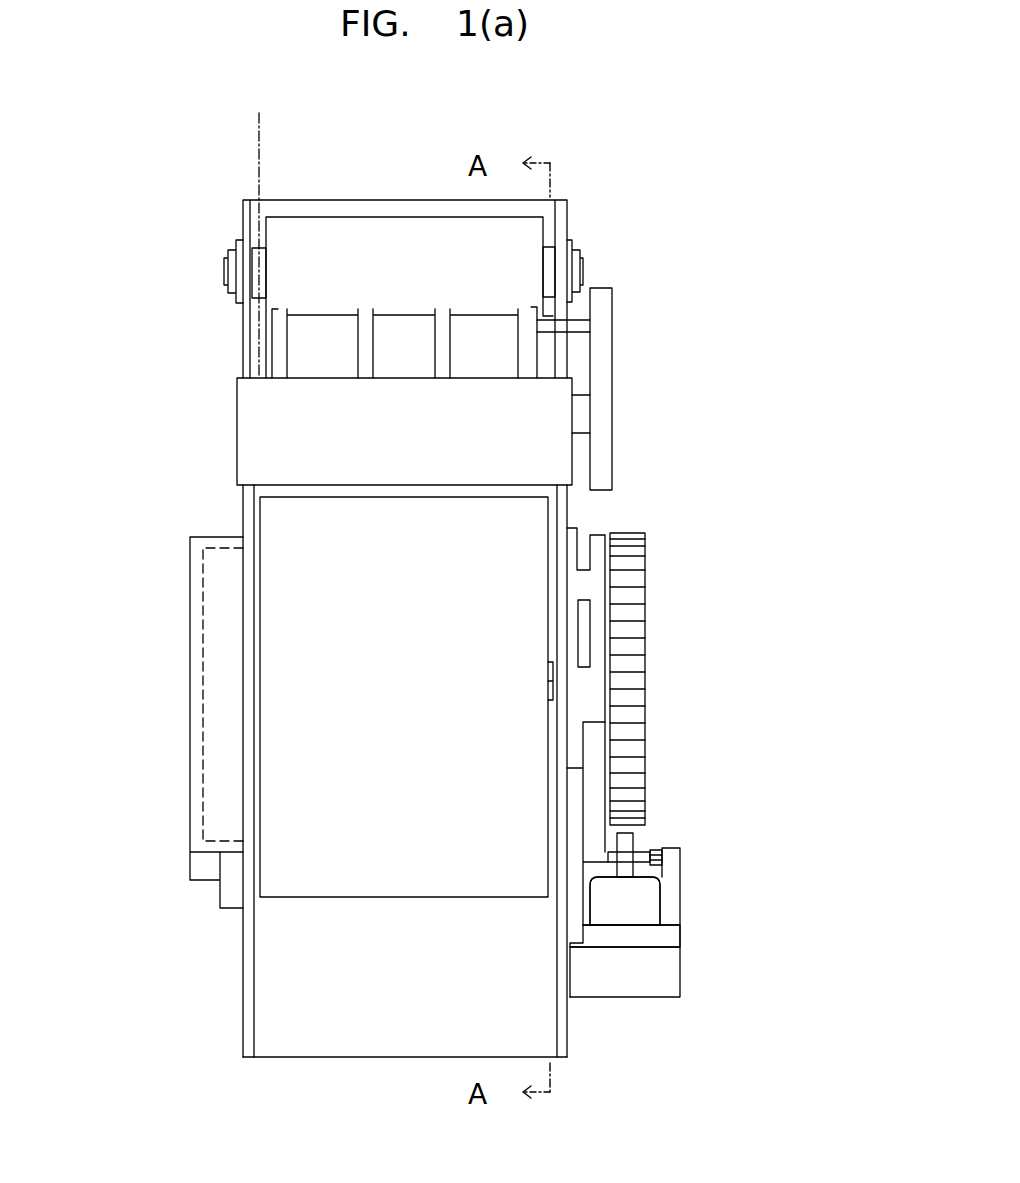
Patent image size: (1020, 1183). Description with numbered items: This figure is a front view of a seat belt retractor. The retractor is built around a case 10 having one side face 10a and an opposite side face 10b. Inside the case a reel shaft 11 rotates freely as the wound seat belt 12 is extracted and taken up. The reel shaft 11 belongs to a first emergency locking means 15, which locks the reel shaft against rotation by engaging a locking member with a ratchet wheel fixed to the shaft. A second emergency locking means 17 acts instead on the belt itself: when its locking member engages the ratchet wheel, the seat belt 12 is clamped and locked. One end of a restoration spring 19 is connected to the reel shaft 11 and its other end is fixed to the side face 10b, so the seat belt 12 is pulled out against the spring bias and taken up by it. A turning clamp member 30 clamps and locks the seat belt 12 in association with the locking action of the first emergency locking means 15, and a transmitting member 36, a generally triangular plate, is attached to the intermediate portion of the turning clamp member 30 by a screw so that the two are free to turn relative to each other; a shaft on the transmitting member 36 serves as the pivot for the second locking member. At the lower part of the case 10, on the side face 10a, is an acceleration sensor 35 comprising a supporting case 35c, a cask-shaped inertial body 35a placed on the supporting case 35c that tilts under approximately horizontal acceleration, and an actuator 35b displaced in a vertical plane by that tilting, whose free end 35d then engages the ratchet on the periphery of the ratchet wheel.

The case 10 is at (373, 755).
The one side face 10a is at (570, 1015).
The side face 10b is at (243, 978).
The reel shaft 11 is at (553, 688).
The seat belt 12 is at (259, 152).
The first emergency locking means 15 is at (660, 665).
The second emergency locking means 17 is at (605, 263).
The restoration spring 19 is at (207, 842).
The turning clamp member 30 is at (352, 265).
The acceleration sensor 35 is at (682, 952).
The cask-shaped inertial body 35a is at (627, 905).
The actuator 35b is at (655, 870).
The supporting case 35c is at (657, 938).
The free end 35d is at (636, 832).
The transmitting member 36 is at (605, 343).